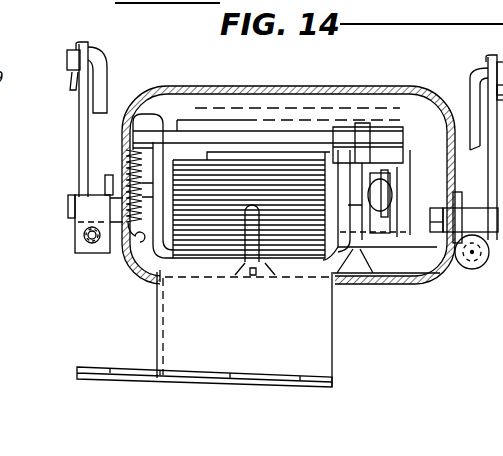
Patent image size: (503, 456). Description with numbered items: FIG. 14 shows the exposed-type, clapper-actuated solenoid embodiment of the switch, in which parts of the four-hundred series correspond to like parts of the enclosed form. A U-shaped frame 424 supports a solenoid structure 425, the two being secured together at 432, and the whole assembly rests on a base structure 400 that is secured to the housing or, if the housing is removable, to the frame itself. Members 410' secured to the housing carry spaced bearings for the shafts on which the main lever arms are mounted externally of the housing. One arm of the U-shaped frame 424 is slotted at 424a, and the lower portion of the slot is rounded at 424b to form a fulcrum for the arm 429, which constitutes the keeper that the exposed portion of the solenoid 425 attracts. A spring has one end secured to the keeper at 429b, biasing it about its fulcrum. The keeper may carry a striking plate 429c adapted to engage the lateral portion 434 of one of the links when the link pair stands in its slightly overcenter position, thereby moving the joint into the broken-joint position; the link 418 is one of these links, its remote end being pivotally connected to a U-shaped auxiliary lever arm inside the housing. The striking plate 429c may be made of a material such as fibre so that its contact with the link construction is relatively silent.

The base structure 400 is at (322, 352).
The members 410' is at (243, 202).
The link 418 is at (413, 186).
The U-shaped frame 424 is at (114, 241).
The slot 424a is at (145, 120).
The rounded lower slot portion 424b is at (128, 153).
The solenoid structure 425 is at (238, 152).
The keeper arm 429 is at (176, 140).
The spring anchorage 429b is at (128, 129).
The striking plate 429c is at (380, 160).
The securing means 432 is at (235, 282).
The lateral link portion 434 is at (393, 173).